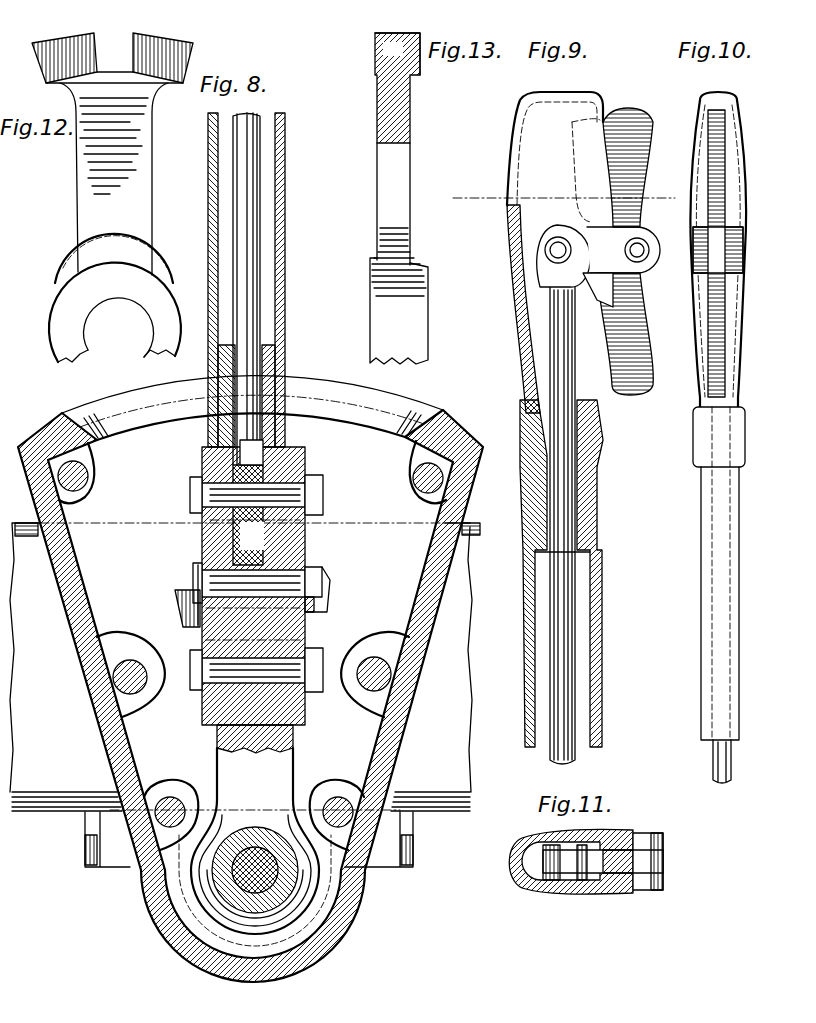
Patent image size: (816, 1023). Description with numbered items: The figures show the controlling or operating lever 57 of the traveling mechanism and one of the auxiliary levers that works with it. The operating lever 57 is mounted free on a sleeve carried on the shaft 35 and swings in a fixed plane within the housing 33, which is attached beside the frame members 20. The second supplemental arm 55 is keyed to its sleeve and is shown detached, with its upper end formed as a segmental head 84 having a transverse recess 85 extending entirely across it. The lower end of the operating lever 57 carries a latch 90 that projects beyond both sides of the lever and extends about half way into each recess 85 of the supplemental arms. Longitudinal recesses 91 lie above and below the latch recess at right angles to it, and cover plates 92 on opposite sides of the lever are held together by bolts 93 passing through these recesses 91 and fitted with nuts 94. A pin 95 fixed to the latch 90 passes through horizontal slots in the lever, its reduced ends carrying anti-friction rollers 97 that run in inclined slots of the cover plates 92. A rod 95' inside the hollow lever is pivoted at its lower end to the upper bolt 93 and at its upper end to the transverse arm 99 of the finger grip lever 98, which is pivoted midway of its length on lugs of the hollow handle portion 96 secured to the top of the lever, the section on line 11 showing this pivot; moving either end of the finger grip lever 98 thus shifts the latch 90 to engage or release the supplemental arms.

In FIG. 9, the section line 11 is at (565, 197).
In FIG. 8, the frame members 20 is at (40, 812).
In FIG. 8, the housing 33 is at (78, 662).
In FIG. 8, the shaft 35 is at (232, 910).
In FIG. 12, the second supplemental arm 55 is at (114, 217).
In FIG. 13, the second supplemental arm 55 is at (411, 170).
In FIG. 8, the operating lever 57 is at (255, 835).
In FIG. 12, the segmental heads 84 is at (58, 38).
In FIG. 13, the segmental heads 84 is at (375, 37).
In FIG. 8, the segmental heads 84 is at (178, 600).
In FIG. 12, the transverse recesses 85 is at (148, 58).
In FIG. 13, the transverse recesses 85 is at (397, 88).
In FIG. 8, the latch 90 is at (306, 551).
In FIG. 8, the longitudinal recesses 91 is at (300, 520).
In FIG. 8, the cover plates 92 is at (202, 541).
In FIG. 8, the bolts 93 is at (197, 494).
In FIG. 8, the nuts 94 is at (323, 494).
In FIG. 8, the pin 95 is at (248, 505).
In FIG. 8, the rod 95' is at (277, 289).
In FIG. 9, the rod 95' is at (587, 525).
In FIG. 10, the rod 95' is at (736, 761).
In FIG. 8, the hollow handle portion 96 is at (286, 191).
In FIG. 9, the hollow handle portion 96 is at (510, 146).
In FIG. 10, the hollow handle portion 96 is at (746, 167).
In FIG. 11, the hollow handle portion 96 is at (512, 876).
In FIG. 8, the anti-friction rollers 97 is at (314, 598).
In FIG. 9, the anti-friction rollers 97 is at (660, 252).
In FIG. 10, the anti-friction rollers 97 is at (678, 246).
In FIG. 11, the anti-friction rollers 97 is at (660, 840).
In FIG. 8, the finger grip lever 98 is at (200, 566).
In FIG. 9, the finger grip lever 98 is at (648, 112).
In FIG. 11, the finger grip lever 98 is at (602, 893).
In FIG. 8, the transverse arm 99 is at (196, 583).
In FIG. 9, the transverse arm 99 is at (563, 235).
In FIG. 11, the transverse arm 99 is at (598, 848).